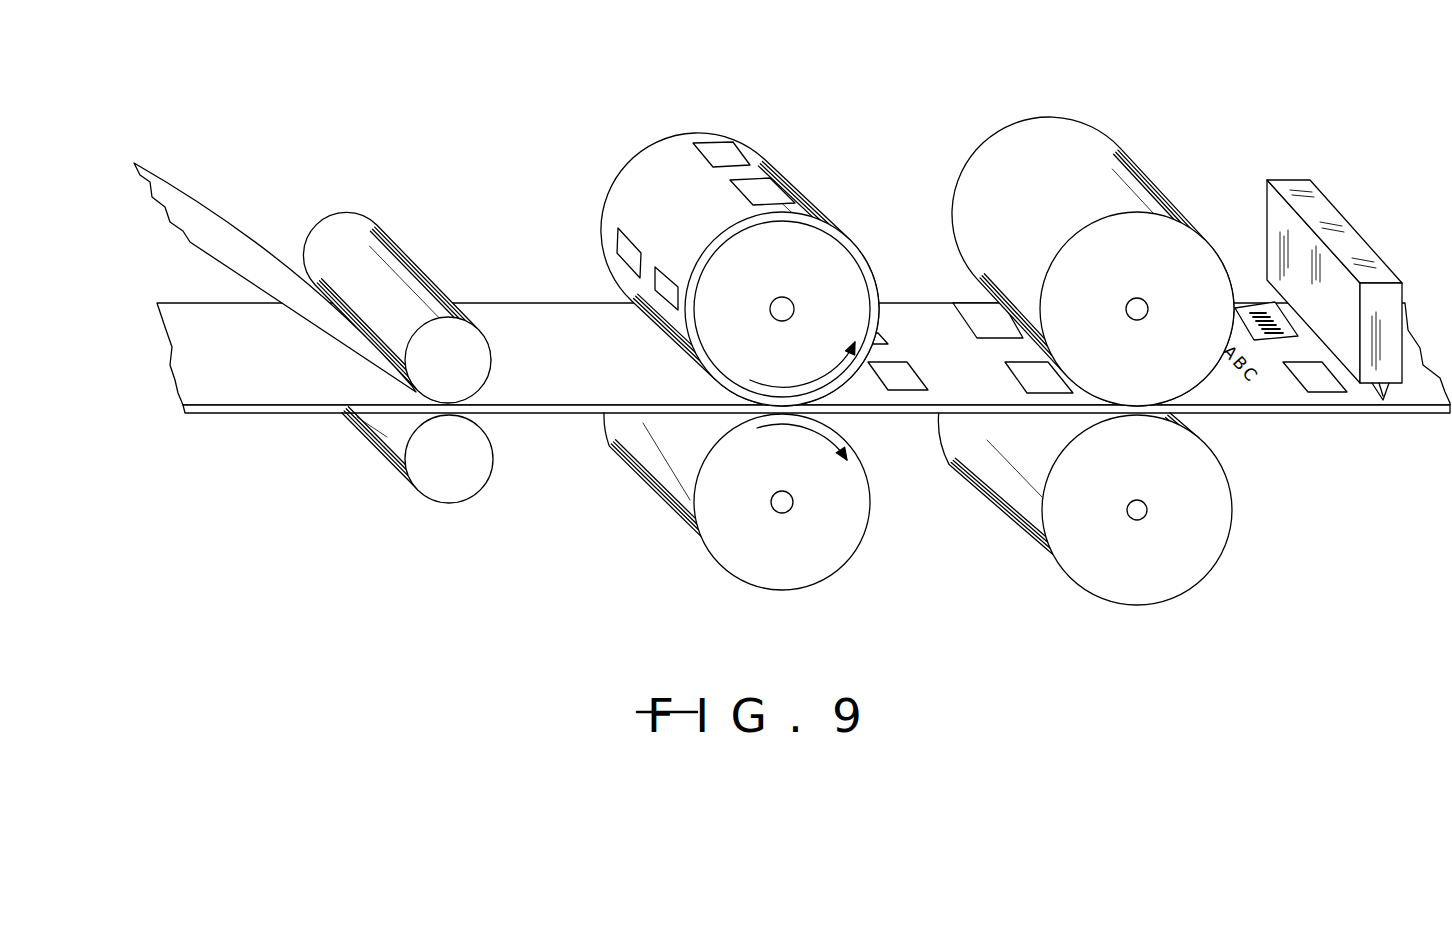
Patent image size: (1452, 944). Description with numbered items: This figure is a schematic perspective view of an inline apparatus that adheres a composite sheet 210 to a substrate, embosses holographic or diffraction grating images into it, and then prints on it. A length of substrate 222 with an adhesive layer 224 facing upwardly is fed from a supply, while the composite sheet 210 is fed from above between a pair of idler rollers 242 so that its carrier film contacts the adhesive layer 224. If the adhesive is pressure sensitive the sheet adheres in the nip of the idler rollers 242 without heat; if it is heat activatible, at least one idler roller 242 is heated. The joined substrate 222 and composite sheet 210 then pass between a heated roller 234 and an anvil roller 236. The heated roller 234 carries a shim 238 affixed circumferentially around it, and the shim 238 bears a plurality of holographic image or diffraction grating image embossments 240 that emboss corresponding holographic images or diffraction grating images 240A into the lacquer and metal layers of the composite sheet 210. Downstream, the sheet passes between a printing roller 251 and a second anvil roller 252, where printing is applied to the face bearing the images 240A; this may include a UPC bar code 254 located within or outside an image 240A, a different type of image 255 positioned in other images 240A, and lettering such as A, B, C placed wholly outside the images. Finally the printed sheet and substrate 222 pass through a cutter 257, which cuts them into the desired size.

The composite sheet 210 is at (212, 211).
The substrate 222 is at (235, 413).
The adhesive layer 224 is at (258, 353).
The heated roller 234 is at (845, 267).
The anvil roller 236 is at (848, 523).
The shim 238 is at (643, 182).
The holographic image or diffraction grating image embossments 240 is at (712, 142).
The holographic images or diffraction grating images 240A is at (913, 390).
The idler rollers 242 is at (335, 235).
The printing roller 251 is at (1100, 148).
The second anvil roller 252 is at (1137, 585).
The UPC bar code 254 is at (1257, 313).
The different type of image 255 is at (1310, 362).
The cutter 257 is at (1290, 177).